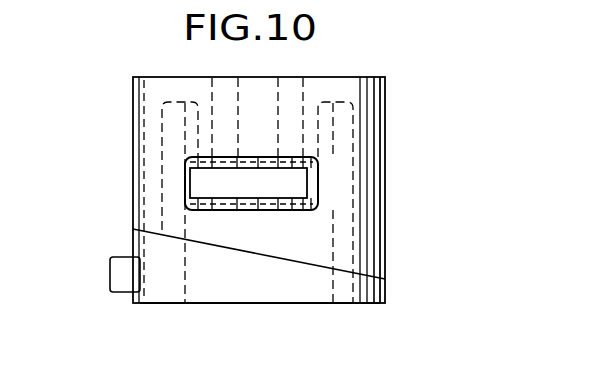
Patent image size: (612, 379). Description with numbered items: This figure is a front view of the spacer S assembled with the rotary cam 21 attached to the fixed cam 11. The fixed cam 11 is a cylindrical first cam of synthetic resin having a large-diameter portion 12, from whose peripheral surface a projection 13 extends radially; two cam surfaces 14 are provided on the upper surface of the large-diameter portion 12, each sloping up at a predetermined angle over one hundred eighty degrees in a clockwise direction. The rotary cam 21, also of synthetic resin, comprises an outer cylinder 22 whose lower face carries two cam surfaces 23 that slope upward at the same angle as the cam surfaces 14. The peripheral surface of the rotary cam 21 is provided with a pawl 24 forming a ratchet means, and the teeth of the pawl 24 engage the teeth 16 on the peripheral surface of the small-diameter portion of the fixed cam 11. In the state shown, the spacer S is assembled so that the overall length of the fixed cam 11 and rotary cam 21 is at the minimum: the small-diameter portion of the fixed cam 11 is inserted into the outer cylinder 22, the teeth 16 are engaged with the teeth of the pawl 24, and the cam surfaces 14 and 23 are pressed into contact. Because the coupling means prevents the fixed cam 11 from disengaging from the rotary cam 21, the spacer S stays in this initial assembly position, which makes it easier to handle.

The fixed cam 11 is at (131, 307).
The large-diameter portion 12 is at (236, 290).
The projection 13 is at (111, 270).
The cam surfaces 14 is at (321, 254).
The teeth 16 is at (296, 206).
The rotary cam 21 is at (276, 210).
The outer cylinder 22 is at (145, 129).
The cam surfaces 23 is at (360, 275).
The pawl 24 is at (322, 179).
The spacer S is at (401, 288).